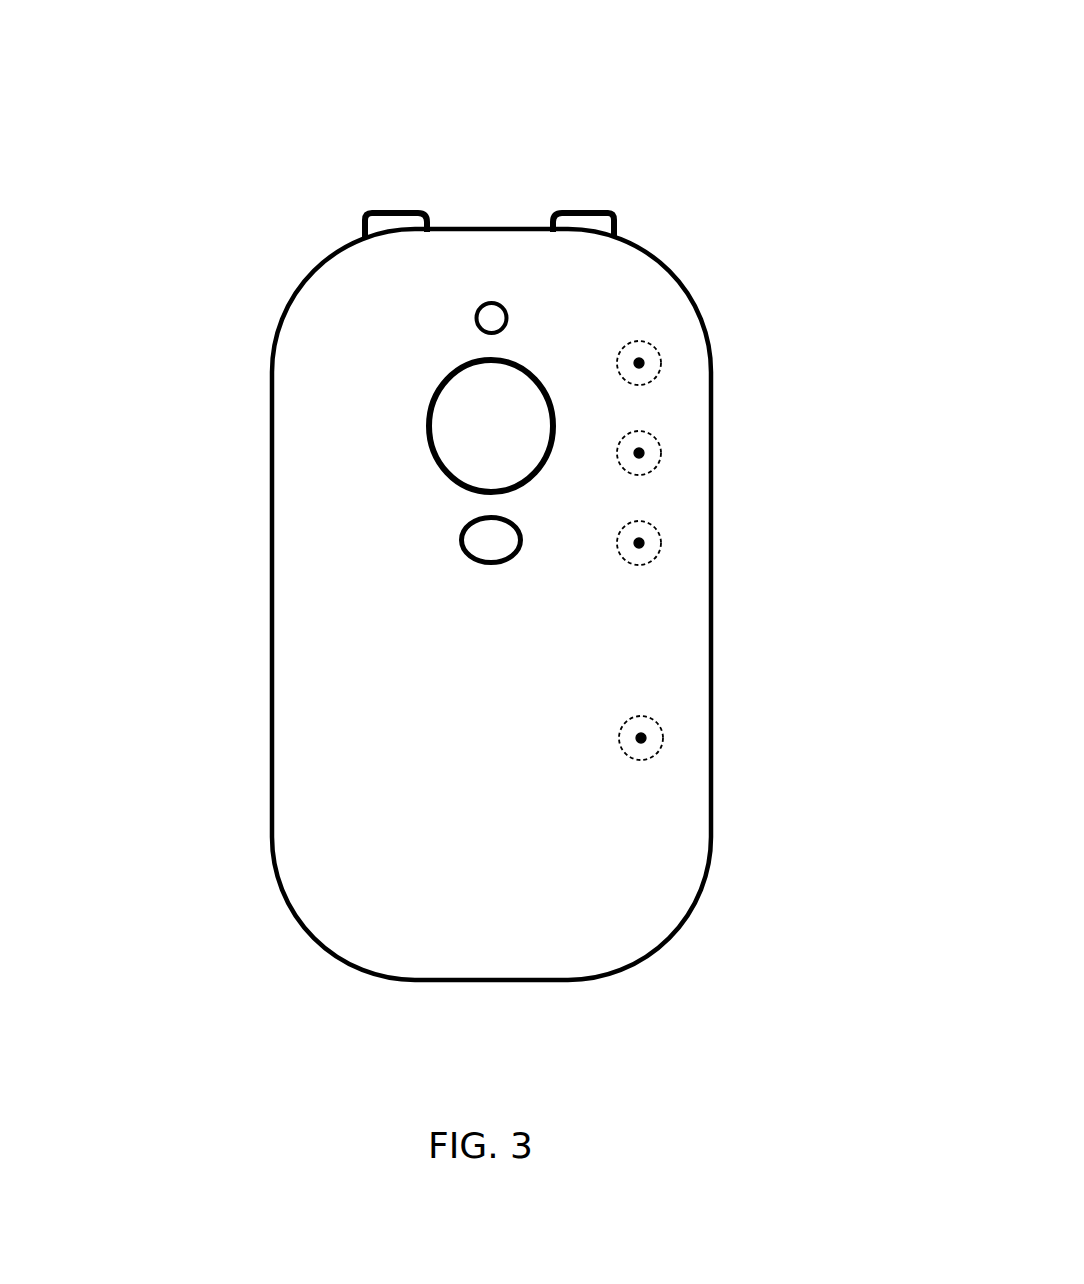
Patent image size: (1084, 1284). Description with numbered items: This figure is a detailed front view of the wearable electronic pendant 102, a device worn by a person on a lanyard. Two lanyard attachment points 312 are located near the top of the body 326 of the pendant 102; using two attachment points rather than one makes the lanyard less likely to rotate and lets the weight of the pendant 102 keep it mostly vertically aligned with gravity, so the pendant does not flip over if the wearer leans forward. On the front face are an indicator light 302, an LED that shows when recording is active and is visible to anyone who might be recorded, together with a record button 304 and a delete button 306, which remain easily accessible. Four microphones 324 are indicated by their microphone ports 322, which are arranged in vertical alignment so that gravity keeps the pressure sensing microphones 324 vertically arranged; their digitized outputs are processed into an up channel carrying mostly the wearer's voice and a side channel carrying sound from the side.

The pendant 102 is at (565, 26).
The indicator light 302 is at (461, 318).
The record button 304 is at (415, 423).
The delete button 306 is at (440, 538).
The attachment points 312 is at (437, 205).
The microphone ports 322 is at (655, 533).
The microphones 324 is at (630, 385).
The body 326 is at (713, 880).